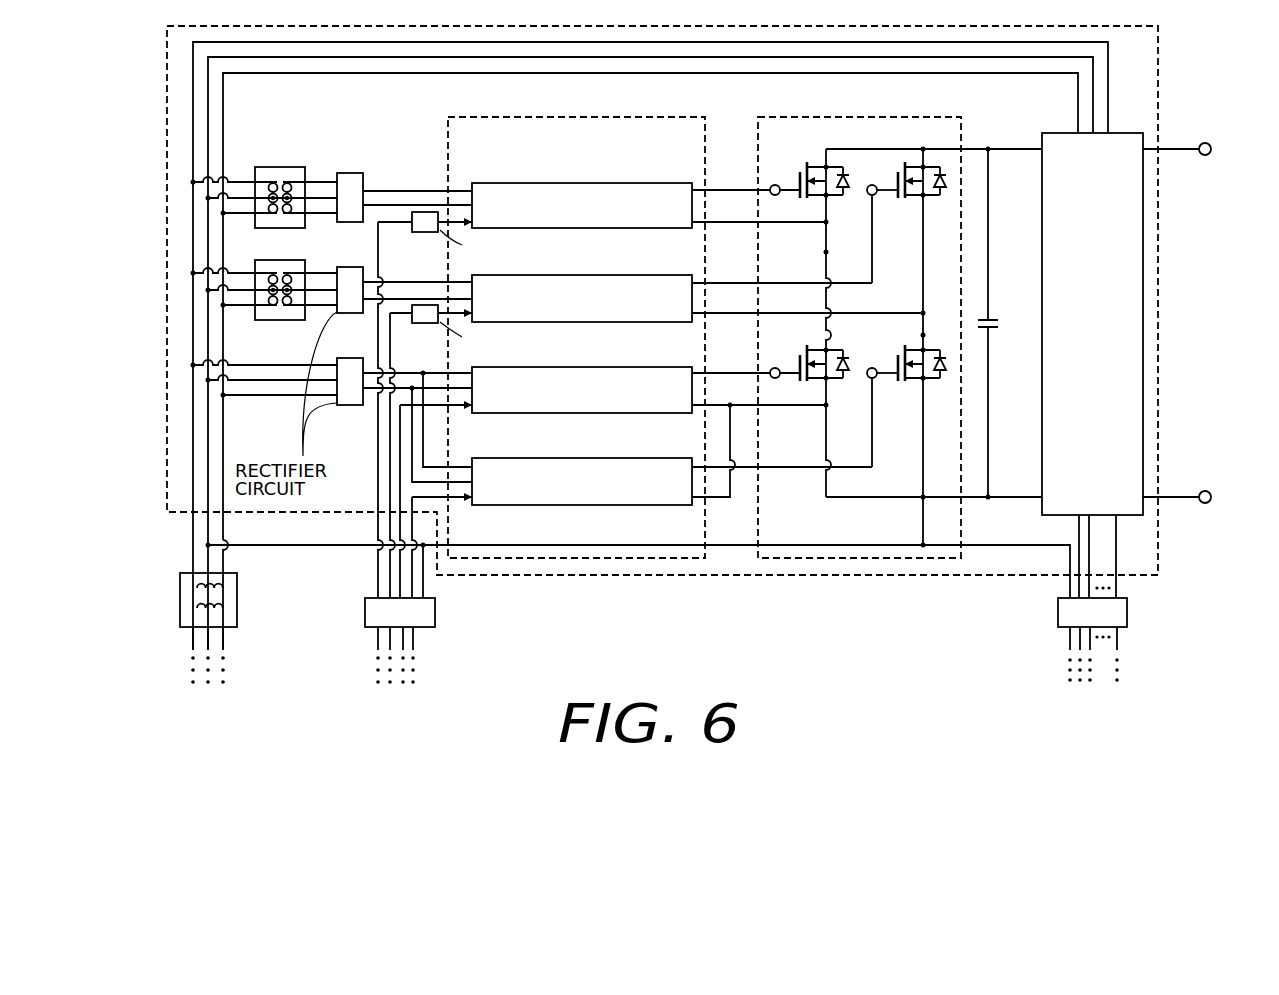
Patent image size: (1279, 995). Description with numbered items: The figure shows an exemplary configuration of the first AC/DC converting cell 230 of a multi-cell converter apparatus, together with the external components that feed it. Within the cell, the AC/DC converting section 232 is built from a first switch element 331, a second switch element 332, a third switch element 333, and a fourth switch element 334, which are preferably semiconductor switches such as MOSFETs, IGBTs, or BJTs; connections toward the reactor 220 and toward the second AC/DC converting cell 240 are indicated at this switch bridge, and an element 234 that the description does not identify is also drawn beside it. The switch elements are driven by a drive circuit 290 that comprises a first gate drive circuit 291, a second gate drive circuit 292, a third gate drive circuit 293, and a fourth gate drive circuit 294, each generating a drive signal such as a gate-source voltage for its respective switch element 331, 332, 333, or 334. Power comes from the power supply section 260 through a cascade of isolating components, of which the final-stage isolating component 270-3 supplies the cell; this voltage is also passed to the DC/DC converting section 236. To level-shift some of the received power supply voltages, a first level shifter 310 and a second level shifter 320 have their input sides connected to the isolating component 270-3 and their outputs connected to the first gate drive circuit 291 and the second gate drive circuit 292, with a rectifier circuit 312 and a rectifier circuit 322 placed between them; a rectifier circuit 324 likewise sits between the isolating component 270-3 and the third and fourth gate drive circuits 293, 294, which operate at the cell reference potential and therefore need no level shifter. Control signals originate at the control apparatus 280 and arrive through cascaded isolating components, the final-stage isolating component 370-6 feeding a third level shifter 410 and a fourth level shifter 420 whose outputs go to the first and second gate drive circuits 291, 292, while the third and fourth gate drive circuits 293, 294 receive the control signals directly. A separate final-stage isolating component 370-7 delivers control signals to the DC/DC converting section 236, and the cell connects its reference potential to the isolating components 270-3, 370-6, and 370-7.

The first AC/DC converting cell 230 is at (795, 576).
The AC/DC converting section 232 is at (862, 117).
The capacitor 234 is at (990, 318).
The DC/DC converting section 236 is at (1058, 133).
The reactor 220 is at (826, 252).
The second AC/DC converting cell 240 is at (923, 335).
The power supply section 260 is at (209, 672).
The isolating component 270-3 is at (180, 598).
The control apparatus 280 is at (746, 672).
The drive circuit 290 is at (578, 117).
The first gate drive circuit 291 is at (622, 183).
The second gate drive circuit 292 is at (622, 275).
The third gate drive circuit 293 is at (622, 367).
The fourth gate drive circuit 294 is at (622, 458).
The first level shifter 310 is at (283, 167).
The rectifier circuit 312 is at (352, 173).
The second level shifter 320 is at (280, 321).
The rectifier circuit 322 is at (352, 314).
The rectifier circuit 324 is at (352, 406).
The first switch element 331 is at (800, 172).
The second switch element 332 is at (905, 199).
The third switch element 333 is at (800, 383).
The fourth switch element 334 is at (900, 383).
The isolating component 370-6 is at (435, 612).
The isolating component 370-7 is at (1127, 612).
The third level shifter 410 is at (423, 233).
The fourth level shifter 420 is at (423, 324).